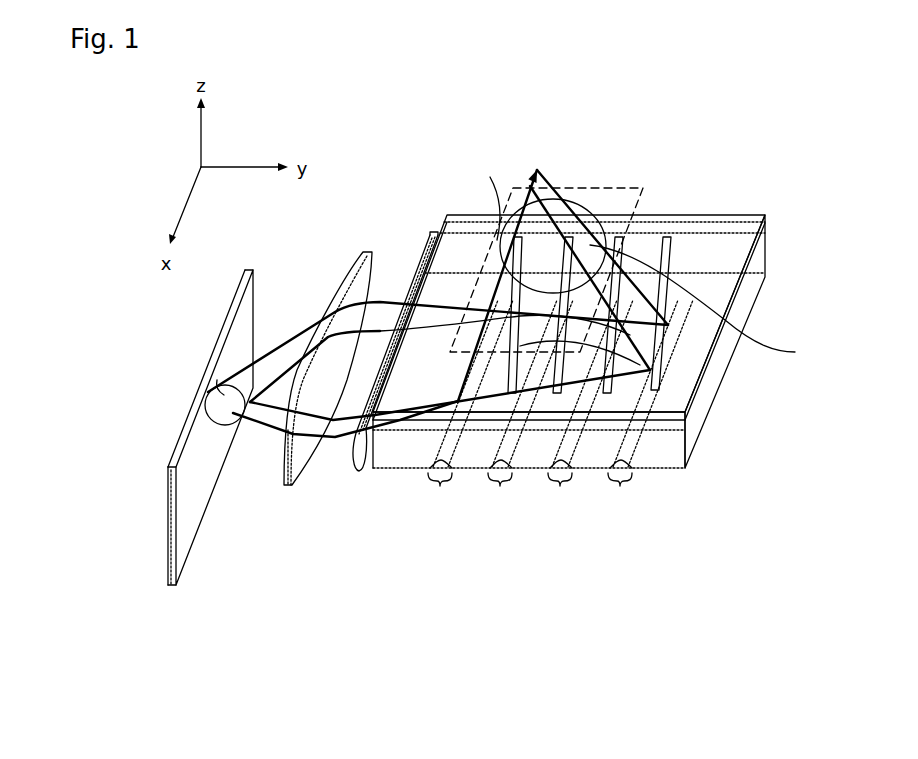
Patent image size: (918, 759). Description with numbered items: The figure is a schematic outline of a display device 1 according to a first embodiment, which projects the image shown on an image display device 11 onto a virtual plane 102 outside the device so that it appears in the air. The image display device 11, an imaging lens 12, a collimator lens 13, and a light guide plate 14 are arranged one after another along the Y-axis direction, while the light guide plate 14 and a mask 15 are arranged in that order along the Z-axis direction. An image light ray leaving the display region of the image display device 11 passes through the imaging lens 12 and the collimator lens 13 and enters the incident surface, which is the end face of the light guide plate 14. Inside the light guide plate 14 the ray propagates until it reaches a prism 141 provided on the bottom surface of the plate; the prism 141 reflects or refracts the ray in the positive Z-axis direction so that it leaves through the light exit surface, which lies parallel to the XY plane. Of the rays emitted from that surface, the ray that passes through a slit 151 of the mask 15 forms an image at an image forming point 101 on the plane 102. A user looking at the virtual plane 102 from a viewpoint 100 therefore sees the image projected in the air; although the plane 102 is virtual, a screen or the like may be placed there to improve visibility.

The display device 1 is at (662, 635).
The image display device 11 is at (169, 586).
The imaging lens 12 is at (287, 487).
The collimator lens 13 is at (359, 472).
The light guide plate 14 is at (569, 393).
The prism 141 is at (620, 486).
The mask 15 is at (578, 283).
The slit 151 is at (613, 383).
The viewpoint 100 is at (527, 178).
The image forming point 101 is at (640, 259).
The virtual plane 102 is at (602, 188).